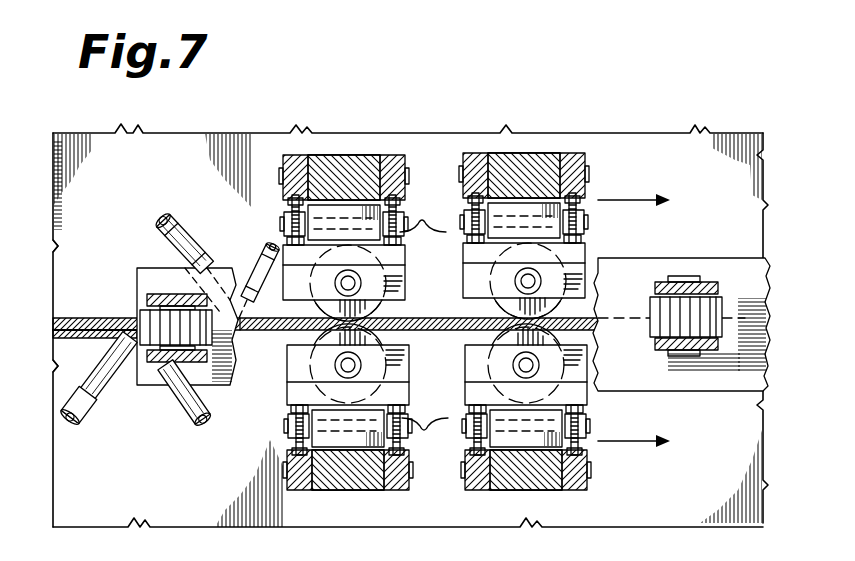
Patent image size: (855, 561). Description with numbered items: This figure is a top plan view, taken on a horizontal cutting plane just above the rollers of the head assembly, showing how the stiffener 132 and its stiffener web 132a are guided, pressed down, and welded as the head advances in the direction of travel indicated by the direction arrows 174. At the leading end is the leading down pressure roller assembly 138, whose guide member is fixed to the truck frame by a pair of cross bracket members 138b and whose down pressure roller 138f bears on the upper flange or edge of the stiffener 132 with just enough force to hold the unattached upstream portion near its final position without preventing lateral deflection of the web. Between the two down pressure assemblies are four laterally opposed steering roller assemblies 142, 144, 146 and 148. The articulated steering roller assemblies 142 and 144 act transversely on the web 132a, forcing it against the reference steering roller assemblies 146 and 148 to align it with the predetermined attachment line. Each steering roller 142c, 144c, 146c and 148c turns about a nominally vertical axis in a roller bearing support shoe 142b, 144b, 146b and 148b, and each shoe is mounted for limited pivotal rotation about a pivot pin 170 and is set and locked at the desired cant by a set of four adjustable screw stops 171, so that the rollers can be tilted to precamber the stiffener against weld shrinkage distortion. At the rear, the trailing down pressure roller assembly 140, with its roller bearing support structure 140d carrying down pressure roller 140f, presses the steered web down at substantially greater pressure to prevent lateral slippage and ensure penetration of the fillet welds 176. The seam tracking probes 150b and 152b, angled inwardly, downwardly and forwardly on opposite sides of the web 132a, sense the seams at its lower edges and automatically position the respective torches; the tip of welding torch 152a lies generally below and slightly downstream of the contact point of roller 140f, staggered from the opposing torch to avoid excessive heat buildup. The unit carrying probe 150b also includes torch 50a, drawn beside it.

The rod 50a is at (186, 218).
The stiffener 132 is at (678, 254).
The stiffener web 132a is at (250, 332).
The leading down pressure roller assembly 138 is at (681, 288).
The cross bracket members 138b is at (720, 288).
The down pressure roller 138f is at (718, 376).
The trailing down pressure roller assembly 140 is at (150, 281).
The down pressure roller bearing support structure 140d is at (138, 290).
The down pressure roller 140f is at (140, 345).
The steering roller assembly 142 is at (350, 206).
The roller bearing support shoe 142b is at (408, 262).
The steering roller 142c is at (398, 304).
The steering roller assembly 144 is at (565, 224).
The roller bearing support shoe 144b is at (586, 243).
The steering roller 144c is at (598, 270).
The steering roller assembly 146 is at (328, 416).
The roller bearing support shoe 146b is at (410, 396).
The steering roller 146c is at (404, 334).
The steering roller assembly 148 is at (560, 424).
The roller bearing support shoe 148b is at (588, 392).
The steering roller 148c is at (590, 330).
The seam tracking probe 150b is at (252, 268).
The welding torch 152a is at (104, 424).
The seam tracking probe 152b is at (178, 420).
The pivot pins 170 is at (425, 344).
The adjustable screw stops 171 is at (288, 212).
The direction arrows 174 is at (624, 198).
The fillet welds 176 is at (56, 296).